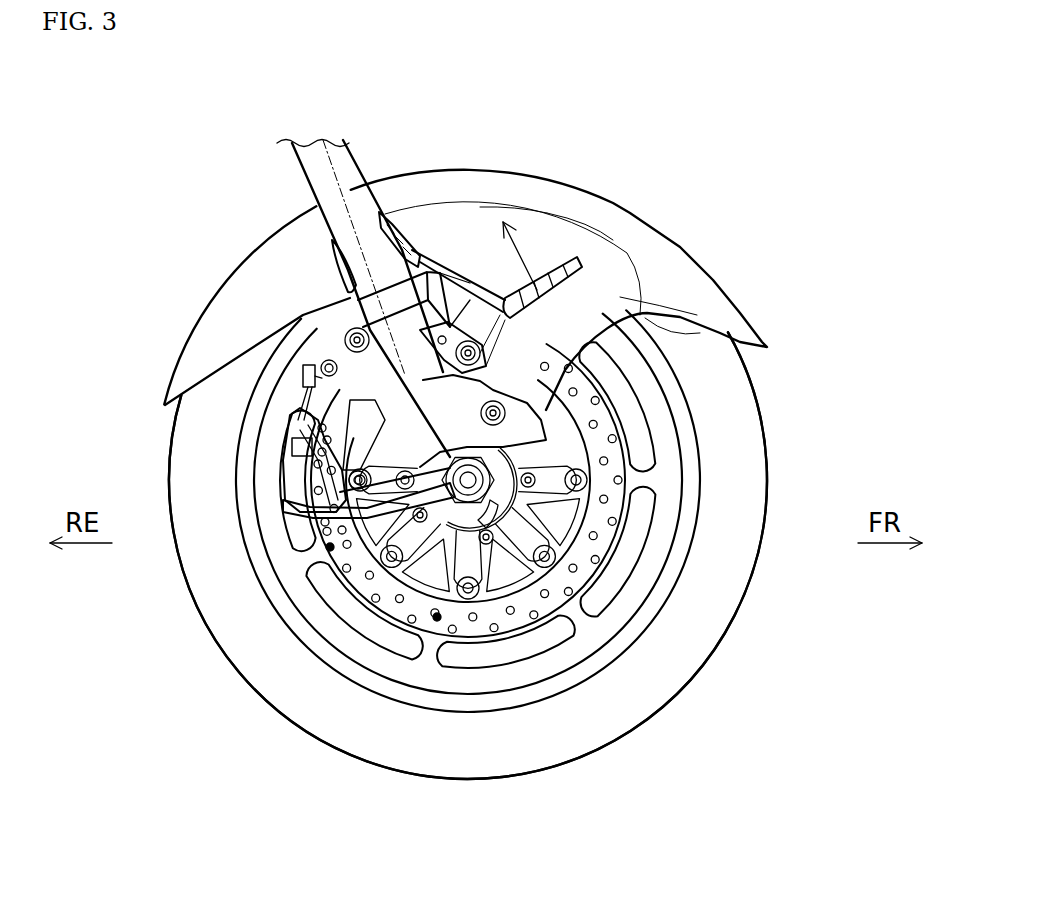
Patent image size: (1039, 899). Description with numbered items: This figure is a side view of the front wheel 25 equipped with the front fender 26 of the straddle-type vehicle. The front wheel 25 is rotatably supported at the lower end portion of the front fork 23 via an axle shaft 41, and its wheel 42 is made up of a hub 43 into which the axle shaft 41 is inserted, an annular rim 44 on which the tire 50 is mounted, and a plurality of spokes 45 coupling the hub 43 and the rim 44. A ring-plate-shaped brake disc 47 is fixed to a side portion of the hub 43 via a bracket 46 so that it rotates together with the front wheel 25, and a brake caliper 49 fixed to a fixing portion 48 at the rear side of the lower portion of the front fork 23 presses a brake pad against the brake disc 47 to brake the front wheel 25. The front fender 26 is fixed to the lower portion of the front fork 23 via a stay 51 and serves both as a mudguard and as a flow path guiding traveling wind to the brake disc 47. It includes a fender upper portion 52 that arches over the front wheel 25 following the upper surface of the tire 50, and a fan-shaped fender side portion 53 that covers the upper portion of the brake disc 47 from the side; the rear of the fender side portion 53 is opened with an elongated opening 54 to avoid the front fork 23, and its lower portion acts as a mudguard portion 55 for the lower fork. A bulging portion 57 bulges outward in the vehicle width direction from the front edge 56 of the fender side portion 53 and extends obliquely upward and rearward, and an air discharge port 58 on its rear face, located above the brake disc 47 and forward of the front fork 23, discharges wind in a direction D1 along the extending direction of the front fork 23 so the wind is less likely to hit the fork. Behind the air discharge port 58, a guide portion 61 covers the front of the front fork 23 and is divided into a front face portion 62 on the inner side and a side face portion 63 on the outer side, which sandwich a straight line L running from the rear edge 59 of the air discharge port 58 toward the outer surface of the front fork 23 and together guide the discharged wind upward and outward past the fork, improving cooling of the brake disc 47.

The front fork 23 is at (300, 173).
The front wheel 25 is at (782, 424).
The front fender 26 is at (657, 210).
The axle shaft 41 is at (445, 540).
The wheel 42 is at (703, 497).
The hub 43 is at (547, 510).
The rim 44 is at (686, 428).
The spokes 45 is at (647, 457).
The bracket 46 is at (495, 568).
The brake disc 47 is at (502, 630).
The fixing portion 48 is at (372, 502).
The brake caliper 49 is at (300, 467).
The tire 50 is at (733, 660).
The stay 51 is at (357, 357).
The fender upper portion 52 is at (512, 250).
The fender side portion 53 is at (577, 275).
The elongated opening 54 is at (332, 278).
The mudguard portion 55 is at (300, 437).
The front edge 56 is at (700, 333).
The bulging portion 57 is at (620, 297).
The air discharge port 58 is at (565, 258).
The rear edge 59 is at (487, 262).
The guide portion 61 is at (414, 250).
The front face portion 62 is at (440, 262).
The side face portion 63 is at (393, 262).
The straight line L is at (417, 247).
The direction D1 is at (525, 255).